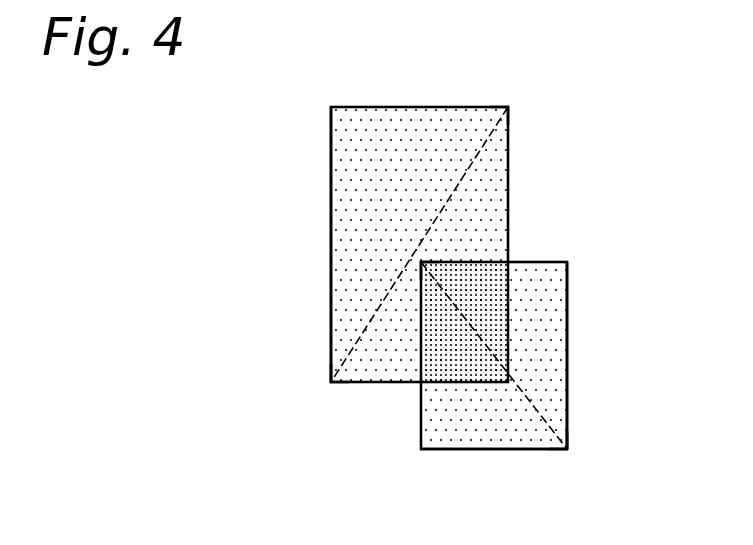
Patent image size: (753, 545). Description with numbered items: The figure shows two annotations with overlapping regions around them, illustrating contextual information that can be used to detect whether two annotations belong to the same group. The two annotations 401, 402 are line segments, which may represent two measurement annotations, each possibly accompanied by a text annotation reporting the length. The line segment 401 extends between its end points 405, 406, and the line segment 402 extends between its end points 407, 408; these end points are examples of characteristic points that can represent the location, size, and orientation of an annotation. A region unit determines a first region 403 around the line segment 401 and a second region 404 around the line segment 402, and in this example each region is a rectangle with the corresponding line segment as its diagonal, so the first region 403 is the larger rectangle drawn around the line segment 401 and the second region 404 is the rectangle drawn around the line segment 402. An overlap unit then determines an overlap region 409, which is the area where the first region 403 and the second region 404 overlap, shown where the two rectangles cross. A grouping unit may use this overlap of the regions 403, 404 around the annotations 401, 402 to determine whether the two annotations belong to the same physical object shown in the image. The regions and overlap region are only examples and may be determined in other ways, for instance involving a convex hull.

The line segment annotation 401 is at (470, 166).
The line segment annotation 402 is at (545, 415).
The first region 403 is at (331, 253).
The second region 404 is at (497, 449).
The end point 405 is at (508, 107).
The end point 406 is at (331, 382).
The end point 407 is at (567, 449).
The end point 408 is at (421, 262).
The overlap region 409 is at (508, 311).